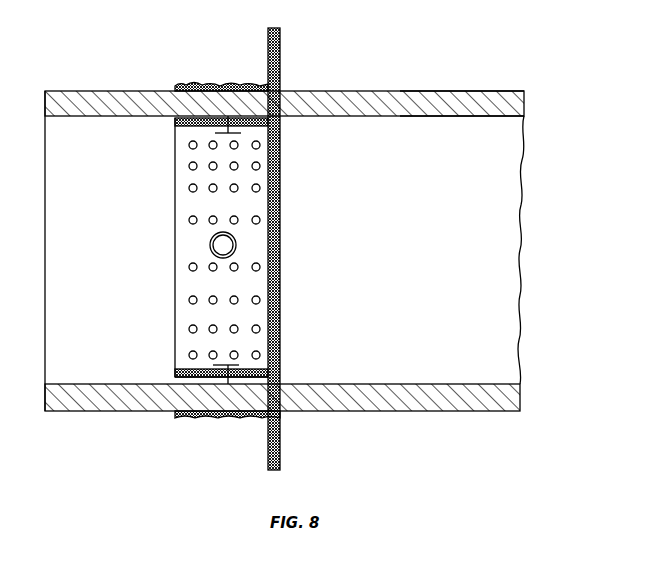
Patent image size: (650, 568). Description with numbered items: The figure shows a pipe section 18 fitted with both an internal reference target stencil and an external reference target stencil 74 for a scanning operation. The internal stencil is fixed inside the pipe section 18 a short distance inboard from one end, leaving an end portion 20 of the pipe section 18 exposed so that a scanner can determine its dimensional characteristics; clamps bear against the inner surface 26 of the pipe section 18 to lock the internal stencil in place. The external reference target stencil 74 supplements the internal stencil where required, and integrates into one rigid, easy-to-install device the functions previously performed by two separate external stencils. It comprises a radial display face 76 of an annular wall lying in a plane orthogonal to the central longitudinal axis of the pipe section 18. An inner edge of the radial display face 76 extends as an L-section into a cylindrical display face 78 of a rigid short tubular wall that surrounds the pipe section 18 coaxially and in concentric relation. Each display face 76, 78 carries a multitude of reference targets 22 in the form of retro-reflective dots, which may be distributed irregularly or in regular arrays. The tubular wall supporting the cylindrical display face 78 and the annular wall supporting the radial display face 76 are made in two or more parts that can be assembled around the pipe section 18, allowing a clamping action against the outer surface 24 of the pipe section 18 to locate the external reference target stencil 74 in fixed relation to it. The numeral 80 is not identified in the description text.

The pipe section 18 is at (540, 378).
The end portion 20 is at (70, 91).
The reference targets 22 is at (189, 267).
The outer surface 24 is at (478, 91).
The inner surface 26 is at (482, 116).
The external reference target stencil 74 is at (308, 72).
The radial display face 76 is at (283, 36).
The cylindrical display face 78 is at (210, 83).
The perforated filter box 80 is at (299, 263).